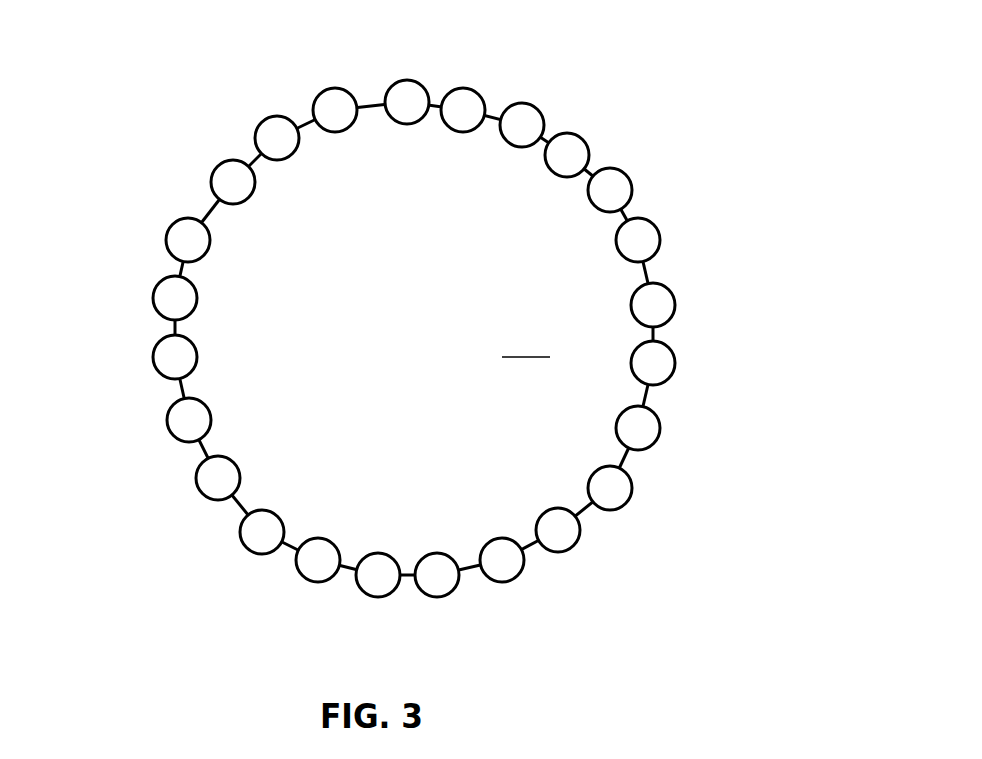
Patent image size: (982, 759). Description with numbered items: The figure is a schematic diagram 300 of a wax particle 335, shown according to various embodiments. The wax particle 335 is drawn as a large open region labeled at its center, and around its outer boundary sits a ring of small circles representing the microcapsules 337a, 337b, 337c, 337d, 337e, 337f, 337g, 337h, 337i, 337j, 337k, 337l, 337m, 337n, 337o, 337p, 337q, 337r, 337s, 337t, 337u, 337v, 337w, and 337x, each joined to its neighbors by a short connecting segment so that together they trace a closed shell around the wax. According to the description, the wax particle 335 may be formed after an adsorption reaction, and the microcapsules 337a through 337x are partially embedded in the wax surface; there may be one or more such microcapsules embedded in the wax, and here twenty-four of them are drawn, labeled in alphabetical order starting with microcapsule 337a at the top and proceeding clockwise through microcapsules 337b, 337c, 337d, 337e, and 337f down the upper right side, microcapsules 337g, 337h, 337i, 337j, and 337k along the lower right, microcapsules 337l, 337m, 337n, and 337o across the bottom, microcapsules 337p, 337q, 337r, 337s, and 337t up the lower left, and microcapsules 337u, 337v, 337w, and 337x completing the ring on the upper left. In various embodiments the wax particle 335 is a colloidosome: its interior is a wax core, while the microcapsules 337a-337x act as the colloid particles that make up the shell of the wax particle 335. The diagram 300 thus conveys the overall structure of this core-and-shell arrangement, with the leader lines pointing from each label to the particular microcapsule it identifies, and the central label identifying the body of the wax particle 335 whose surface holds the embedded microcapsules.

The schematic diagram 300 is at (743, 105).
The wax particle 335 is at (415, 342).
The microcapsule 337a is at (407, 80).
The microcapsule 337b is at (475, 92).
The microcapsule 337c is at (539, 111).
The microcapsule 337d is at (584, 142).
The microcapsule 337e is at (629, 178).
The microcapsule 337f is at (659, 233).
The microcapsule 337g is at (675, 304).
The microcapsule 337h is at (673, 371).
The microcapsule 337i is at (657, 438).
The microcapsule 337j is at (628, 501).
The microcapsule 337k is at (571, 548).
The microcapsule 337l is at (505, 582).
The microcapsule 337m is at (436, 597).
The microcapsule 337n is at (368, 595).
The microcapsule 337o is at (303, 576).
The microcapsule 337p is at (241, 538).
The microcapsule 337q is at (196, 482).
The microcapsule 337r is at (167, 417).
The microcapsule 337s is at (154, 351).
The microcapsule 337t is at (155, 288).
The microcapsule 337u is at (169, 229).
The microcapsule 337v is at (215, 169).
The microcapsule 337w is at (263, 121).
The microcapsule 337x is at (324, 91).